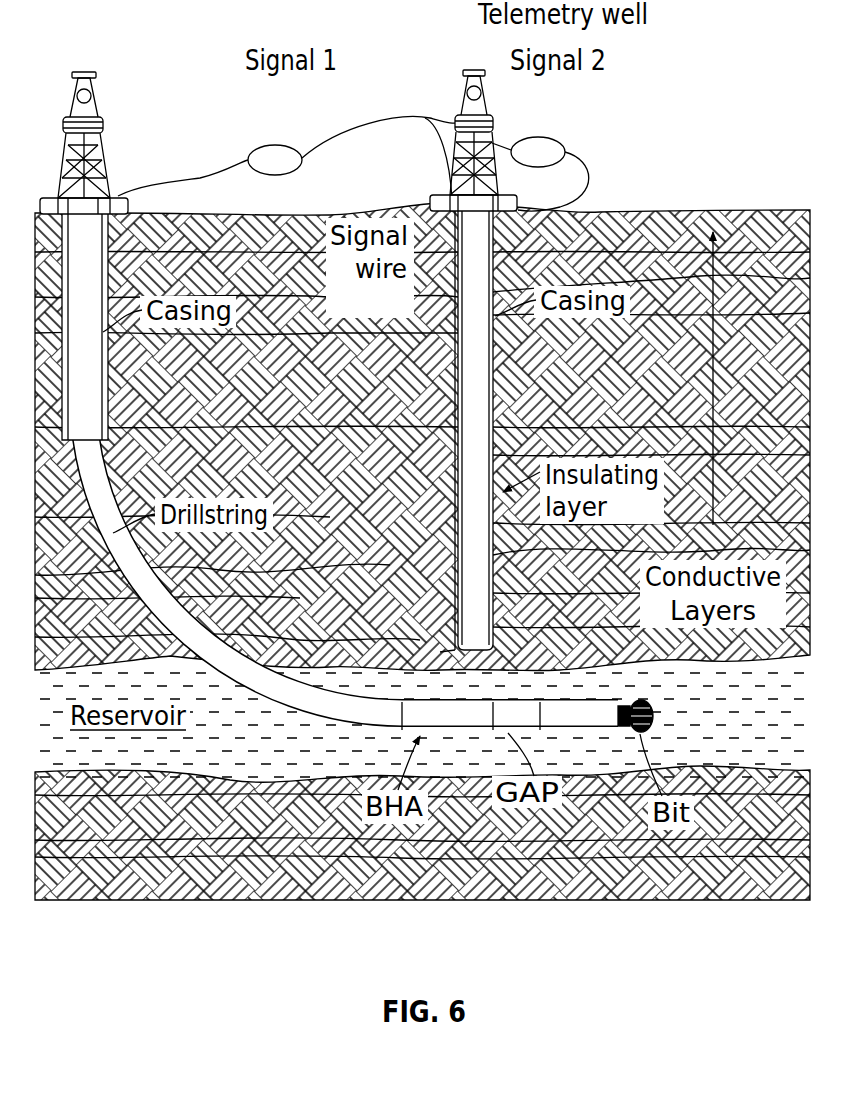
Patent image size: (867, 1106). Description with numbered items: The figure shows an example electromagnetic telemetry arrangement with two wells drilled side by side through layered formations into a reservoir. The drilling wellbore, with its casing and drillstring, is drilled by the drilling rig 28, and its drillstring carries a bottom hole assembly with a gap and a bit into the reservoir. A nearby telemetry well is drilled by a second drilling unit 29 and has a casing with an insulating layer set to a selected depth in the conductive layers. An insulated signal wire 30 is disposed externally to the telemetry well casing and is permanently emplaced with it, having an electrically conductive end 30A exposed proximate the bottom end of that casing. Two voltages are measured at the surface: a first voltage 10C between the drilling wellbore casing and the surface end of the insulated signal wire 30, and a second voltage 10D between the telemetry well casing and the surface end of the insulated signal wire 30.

The drilling rig 28 is at (82, 72).
The second drilling unit 29 is at (470, 72).
The first voltage 10C is at (280, 145).
The second voltage 10D is at (540, 137).
The insulated signal wire 30 is at (450, 286).
The electrically conductive end 30A is at (442, 656).